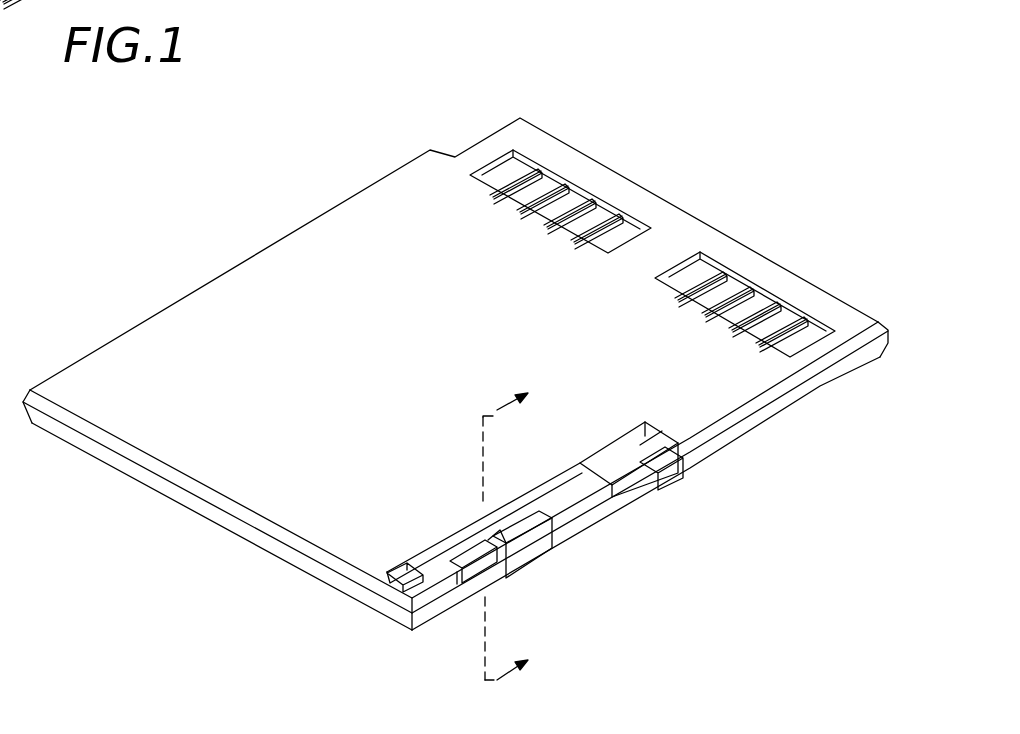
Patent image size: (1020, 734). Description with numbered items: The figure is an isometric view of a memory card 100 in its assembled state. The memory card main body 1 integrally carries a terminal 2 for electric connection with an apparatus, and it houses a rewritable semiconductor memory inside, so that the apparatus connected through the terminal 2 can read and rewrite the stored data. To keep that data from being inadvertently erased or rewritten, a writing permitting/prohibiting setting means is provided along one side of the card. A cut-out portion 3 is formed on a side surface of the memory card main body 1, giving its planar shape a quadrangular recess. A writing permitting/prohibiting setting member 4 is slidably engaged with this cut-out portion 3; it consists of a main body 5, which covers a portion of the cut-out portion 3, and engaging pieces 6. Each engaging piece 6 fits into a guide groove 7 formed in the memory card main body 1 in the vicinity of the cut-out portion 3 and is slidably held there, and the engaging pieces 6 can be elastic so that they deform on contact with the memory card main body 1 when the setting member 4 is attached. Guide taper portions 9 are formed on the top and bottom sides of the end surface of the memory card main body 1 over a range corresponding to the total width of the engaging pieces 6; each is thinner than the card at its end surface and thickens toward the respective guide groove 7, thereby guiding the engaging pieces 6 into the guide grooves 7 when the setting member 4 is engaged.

The memory card 100 is at (771, 116).
The memory card main body 1 is at (213, 326).
The terminal 2 is at (547, 187).
The cut-out portion 3 is at (597, 529).
The writing permitting/prohibiting setting member 4 is at (683, 548).
The main body 5 is at (530, 551).
The engaging pieces 6 is at (521, 562).
The guide groove 7 is at (660, 440).
The guide taper portions 9 is at (652, 460).